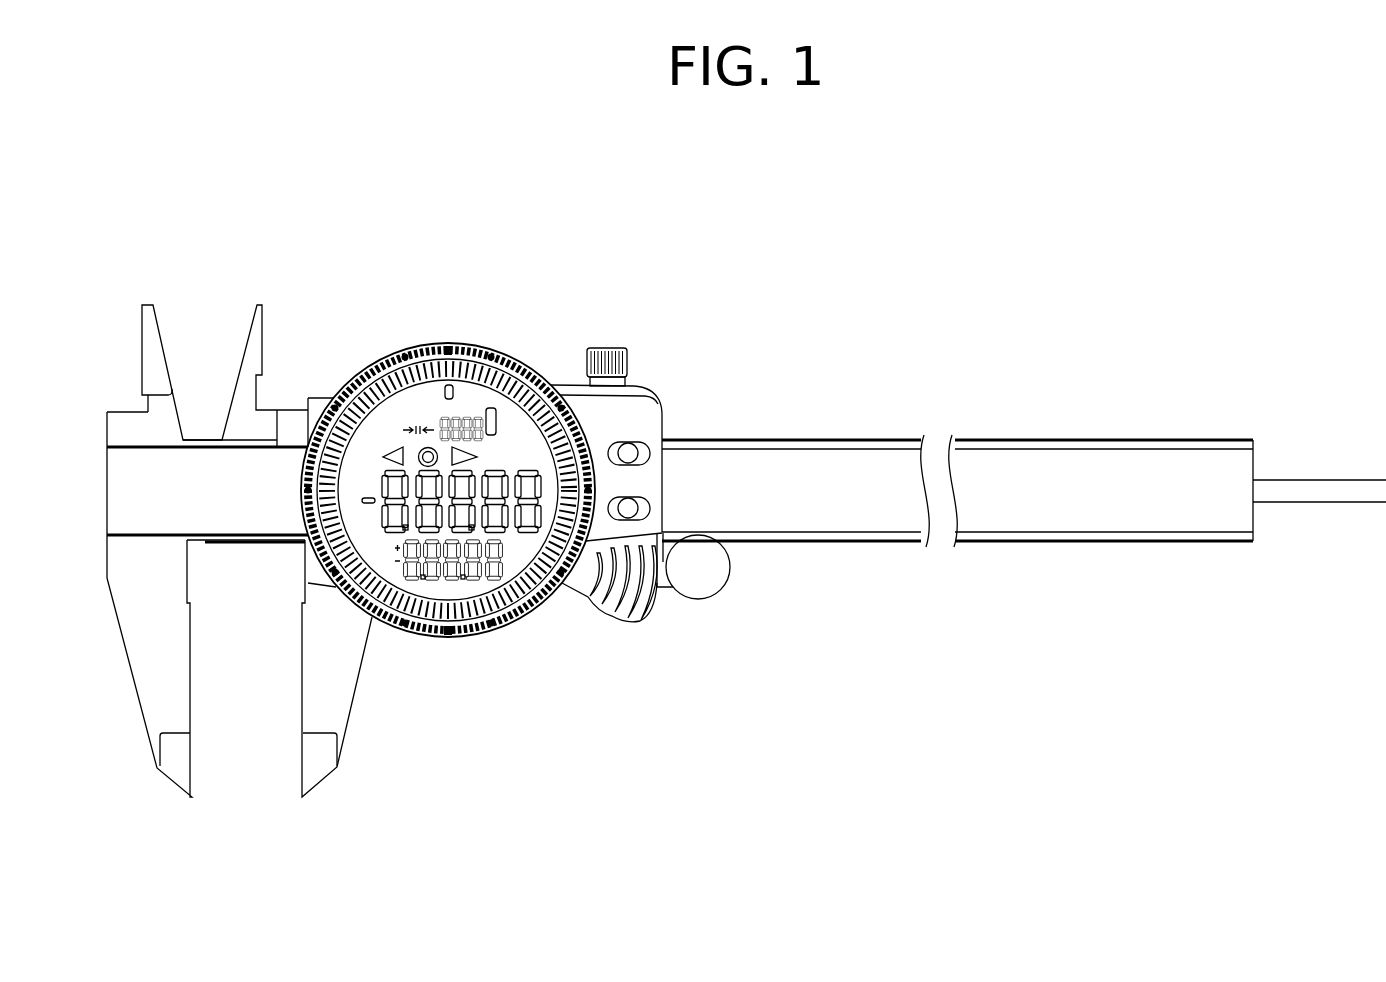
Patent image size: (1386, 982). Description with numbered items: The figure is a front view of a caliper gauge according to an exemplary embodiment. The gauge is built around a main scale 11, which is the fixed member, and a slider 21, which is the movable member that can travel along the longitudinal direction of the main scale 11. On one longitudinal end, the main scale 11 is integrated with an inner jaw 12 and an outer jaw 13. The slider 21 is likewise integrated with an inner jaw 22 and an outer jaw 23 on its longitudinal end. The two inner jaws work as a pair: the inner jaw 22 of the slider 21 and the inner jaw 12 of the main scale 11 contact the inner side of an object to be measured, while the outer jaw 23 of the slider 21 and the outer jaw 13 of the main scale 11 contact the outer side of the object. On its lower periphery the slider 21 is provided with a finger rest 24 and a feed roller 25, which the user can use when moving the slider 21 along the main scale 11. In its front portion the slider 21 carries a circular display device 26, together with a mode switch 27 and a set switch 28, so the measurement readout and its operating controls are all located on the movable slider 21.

The main scale 11 is at (1127, 438).
The inner jaw 12 is at (152, 304).
The outer jaw 13 is at (185, 798).
The slider 21 is at (643, 382).
The inner jaw 22 is at (250, 304).
The outer jaw 23 is at (318, 798).
The finger rest 24 is at (633, 623).
The feed roller 25 is at (700, 600).
The circular display device 26 is at (358, 377).
The mode switch 27 is at (645, 449).
The set switch 28 is at (645, 507).